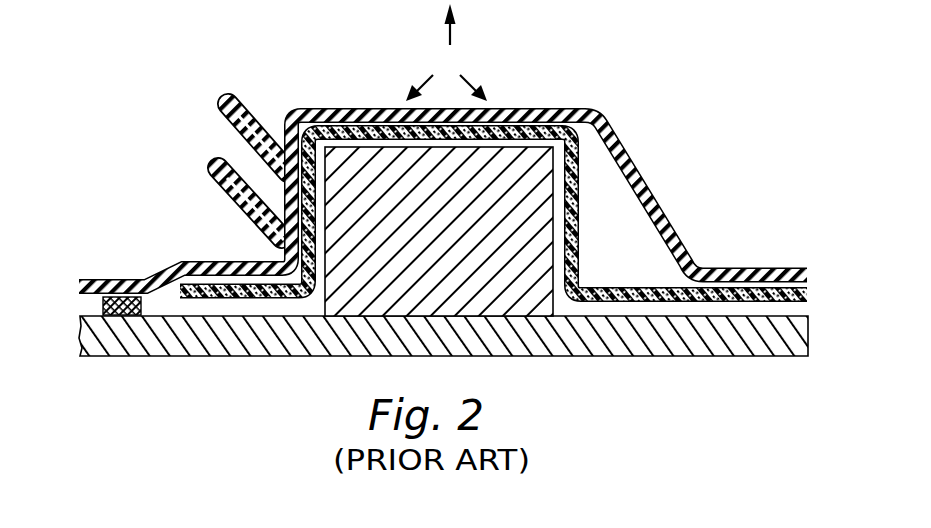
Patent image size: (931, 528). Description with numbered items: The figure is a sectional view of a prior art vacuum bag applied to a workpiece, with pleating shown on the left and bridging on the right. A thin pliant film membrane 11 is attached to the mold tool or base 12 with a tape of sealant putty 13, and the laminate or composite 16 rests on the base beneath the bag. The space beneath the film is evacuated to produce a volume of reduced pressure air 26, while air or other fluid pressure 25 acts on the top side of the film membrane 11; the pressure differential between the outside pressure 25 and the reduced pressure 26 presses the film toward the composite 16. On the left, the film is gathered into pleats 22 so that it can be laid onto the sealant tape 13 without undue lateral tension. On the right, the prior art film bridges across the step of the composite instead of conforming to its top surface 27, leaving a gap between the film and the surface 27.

The film membrane 11 is at (661, 218).
The mold tool or base 12 is at (809, 338).
The sealant putty tape 13 is at (103, 306).
The composite 16 is at (808, 294).
The pleats 22 is at (217, 112).
The fluid pressure 25 is at (446, 52).
The volume of reduced pressure air 26 is at (632, 248).
The top surface of composite 27 is at (318, 120).